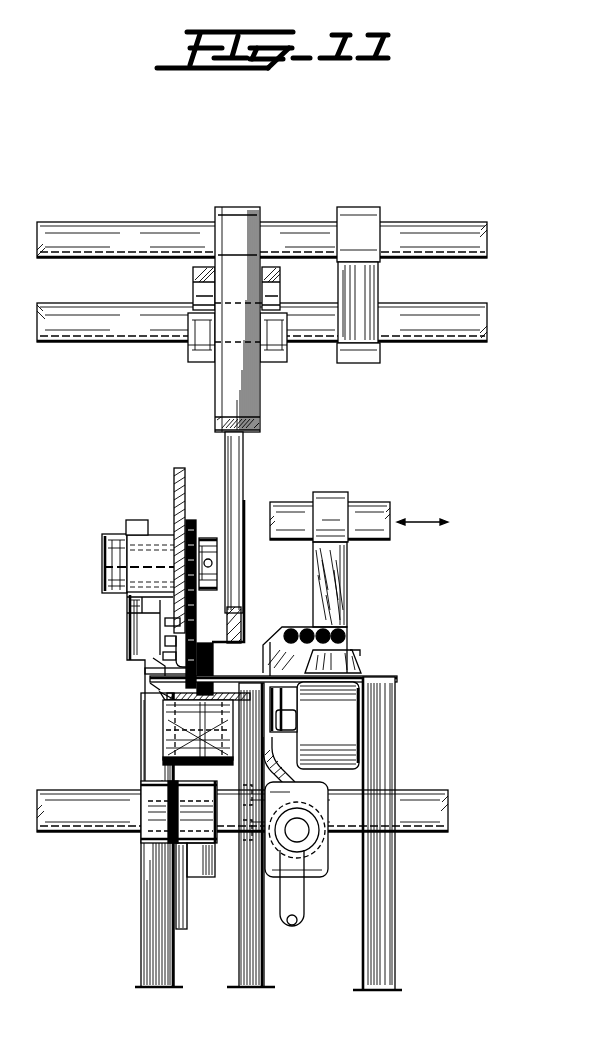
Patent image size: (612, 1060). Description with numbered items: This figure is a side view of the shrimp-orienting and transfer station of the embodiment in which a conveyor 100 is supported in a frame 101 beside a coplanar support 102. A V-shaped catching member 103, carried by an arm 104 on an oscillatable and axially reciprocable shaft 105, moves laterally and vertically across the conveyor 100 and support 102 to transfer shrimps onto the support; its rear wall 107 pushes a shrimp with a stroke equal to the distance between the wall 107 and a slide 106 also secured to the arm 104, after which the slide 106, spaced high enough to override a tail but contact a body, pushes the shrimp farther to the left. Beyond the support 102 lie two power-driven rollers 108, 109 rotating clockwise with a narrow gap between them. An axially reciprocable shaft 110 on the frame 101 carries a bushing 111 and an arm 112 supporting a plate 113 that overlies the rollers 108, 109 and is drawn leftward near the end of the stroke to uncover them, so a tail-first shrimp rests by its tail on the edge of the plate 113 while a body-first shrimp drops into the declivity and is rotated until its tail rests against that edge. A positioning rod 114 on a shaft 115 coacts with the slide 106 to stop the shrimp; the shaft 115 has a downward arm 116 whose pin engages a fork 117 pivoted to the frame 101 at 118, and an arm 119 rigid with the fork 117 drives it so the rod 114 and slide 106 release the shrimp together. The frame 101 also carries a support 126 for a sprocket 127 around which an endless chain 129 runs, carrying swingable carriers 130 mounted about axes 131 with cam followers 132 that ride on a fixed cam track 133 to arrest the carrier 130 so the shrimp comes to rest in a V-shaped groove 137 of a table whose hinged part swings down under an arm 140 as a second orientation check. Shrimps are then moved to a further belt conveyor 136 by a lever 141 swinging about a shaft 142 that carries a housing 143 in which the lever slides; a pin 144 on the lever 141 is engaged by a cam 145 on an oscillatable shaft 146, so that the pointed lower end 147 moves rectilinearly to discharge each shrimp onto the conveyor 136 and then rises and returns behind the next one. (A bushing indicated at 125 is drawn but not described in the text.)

The conveyor 100 is at (397, 701).
The frame 101 is at (162, 970).
The support 102 is at (255, 677).
The V-shaped catching member 103 is at (363, 663).
The arm 104 is at (348, 562).
The shaft 105 is at (369, 516).
The slide 106 is at (267, 658).
The rear wall 107 is at (358, 656).
The roller 108 is at (158, 720).
The roller 109 is at (162, 730).
The shaft 110 is at (55, 803).
The bushing 111 is at (168, 852).
The arm 112 is at (165, 792).
The plate 113 is at (170, 686).
The positioning rod 114 is at (165, 638).
The shaft 115 is at (153, 663).
The arm 116 is at (150, 687).
The fork 117 is at (297, 784).
The pivot 118 is at (307, 850).
The arm 119 is at (292, 926).
The bushing 125 is at (297, 700).
The support 126 is at (127, 607).
The sprocket 127 is at (195, 522).
The endless chain 129 is at (122, 585).
The carrier 130 is at (145, 674).
The axis 131 is at (165, 620).
The cam follower 132 is at (163, 657).
The cam track 133 is at (177, 477).
The belt conveyor 136 is at (165, 763).
The V-shaped groove / table part 137 is at (167, 698).
The arm 140 is at (302, 714).
The lever 141 is at (244, 455).
The shaft 142 is at (82, 230).
The housing 143 is at (224, 385).
The pin 144 is at (269, 337).
The cam 145 is at (266, 296).
The shaft 146 is at (80, 330).
The lower end 147 is at (213, 664).